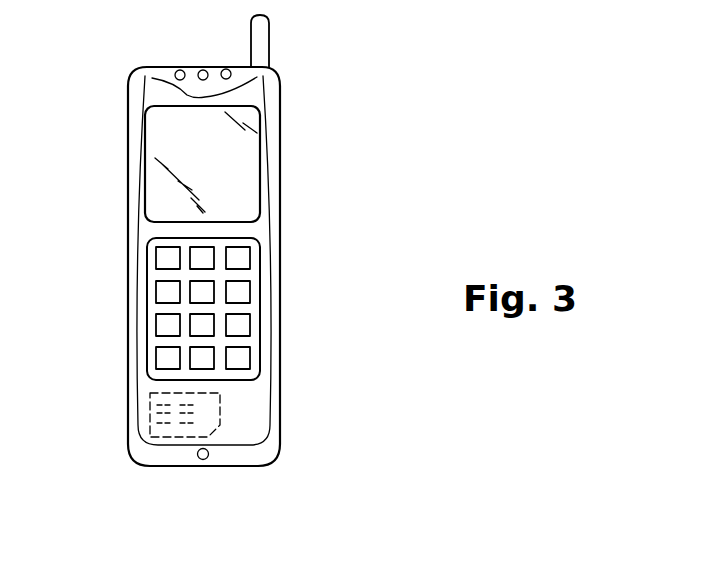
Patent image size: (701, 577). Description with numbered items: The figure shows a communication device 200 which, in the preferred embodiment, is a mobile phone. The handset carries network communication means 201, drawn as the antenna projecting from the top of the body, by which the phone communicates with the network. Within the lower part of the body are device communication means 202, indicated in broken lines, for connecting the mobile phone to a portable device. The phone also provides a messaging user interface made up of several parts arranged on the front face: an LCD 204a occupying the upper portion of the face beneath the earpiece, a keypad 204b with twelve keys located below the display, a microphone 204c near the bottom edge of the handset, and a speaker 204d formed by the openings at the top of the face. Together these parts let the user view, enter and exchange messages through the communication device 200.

The communication device 200 is at (253, 471).
The network communication means 201 is at (270, 33).
The device communication means 202 is at (156, 433).
The LCD 204a is at (147, 140).
The keypad 204b is at (253, 307).
The microphone 204c is at (203, 463).
The speaker 204d is at (167, 67).